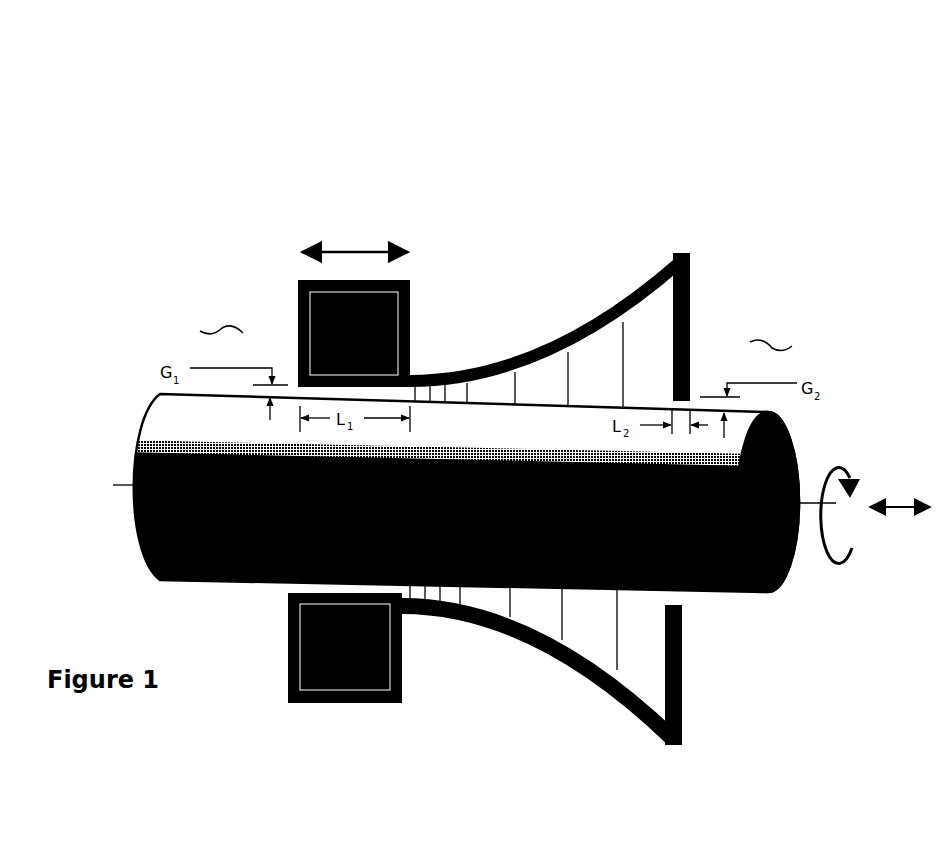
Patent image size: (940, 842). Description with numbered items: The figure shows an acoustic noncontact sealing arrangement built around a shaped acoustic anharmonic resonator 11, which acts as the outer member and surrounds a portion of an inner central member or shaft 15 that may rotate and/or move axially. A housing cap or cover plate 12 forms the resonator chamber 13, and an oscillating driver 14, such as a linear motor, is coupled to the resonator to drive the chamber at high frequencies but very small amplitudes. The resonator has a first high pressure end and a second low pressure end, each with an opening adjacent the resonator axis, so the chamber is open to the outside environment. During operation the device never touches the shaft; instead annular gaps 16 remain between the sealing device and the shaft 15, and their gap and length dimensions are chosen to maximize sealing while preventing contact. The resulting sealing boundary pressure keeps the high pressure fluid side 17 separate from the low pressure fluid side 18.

The shaped acoustic anharmonic resonator 11 is at (591, 244).
The housing cap or cover plate 12 is at (690, 300).
The resonator chamber 13 is at (543, 372).
The oscillating driver 14 is at (297, 322).
The central member or shaft 15 is at (790, 568).
The annular gaps 16 is at (410, 590).
The high pressure fluid side 17 is at (218, 328).
The low pressure fluid side 18 is at (778, 345).